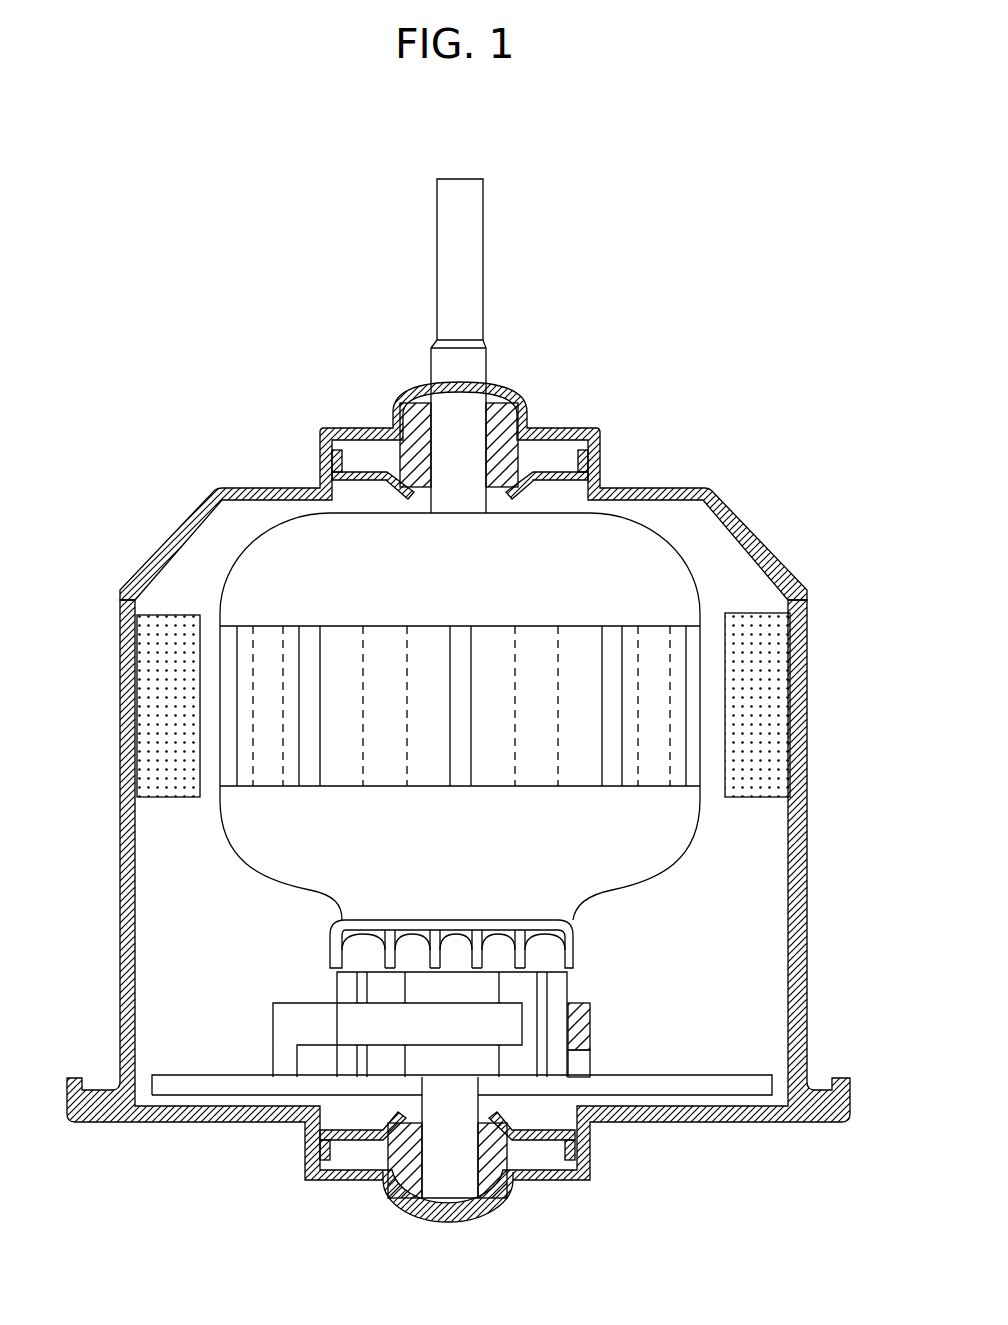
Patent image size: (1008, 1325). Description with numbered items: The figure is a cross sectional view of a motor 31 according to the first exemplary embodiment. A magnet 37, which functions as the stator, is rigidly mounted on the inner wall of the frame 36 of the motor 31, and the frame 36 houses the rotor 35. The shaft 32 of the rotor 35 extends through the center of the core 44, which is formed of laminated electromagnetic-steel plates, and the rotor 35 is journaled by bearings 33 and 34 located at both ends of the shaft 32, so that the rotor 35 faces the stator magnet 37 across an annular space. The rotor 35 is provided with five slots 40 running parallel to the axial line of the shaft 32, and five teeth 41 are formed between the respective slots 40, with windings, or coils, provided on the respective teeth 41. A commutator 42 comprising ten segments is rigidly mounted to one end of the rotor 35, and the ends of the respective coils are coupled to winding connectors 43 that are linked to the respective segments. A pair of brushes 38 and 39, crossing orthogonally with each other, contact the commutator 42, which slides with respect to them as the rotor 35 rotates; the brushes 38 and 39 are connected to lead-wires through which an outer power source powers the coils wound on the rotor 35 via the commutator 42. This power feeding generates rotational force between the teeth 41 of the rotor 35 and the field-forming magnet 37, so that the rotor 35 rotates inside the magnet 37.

The motor 31 is at (553, 400).
The shaft 32 is at (445, 408).
The bearing 33 is at (507, 418).
The bearing 34 is at (495, 1165).
The rotor 35 is at (673, 553).
The frame 36 is at (120, 738).
The magnet 37 is at (168, 667).
The brush 38 is at (288, 1013).
The brush 39 is at (592, 1018).
The slot 40 is at (312, 637).
The tooth 41 is at (390, 775).
The commutator 42 is at (557, 993).
The winding connector 43 is at (337, 957).
The core 44 is at (387, 640).